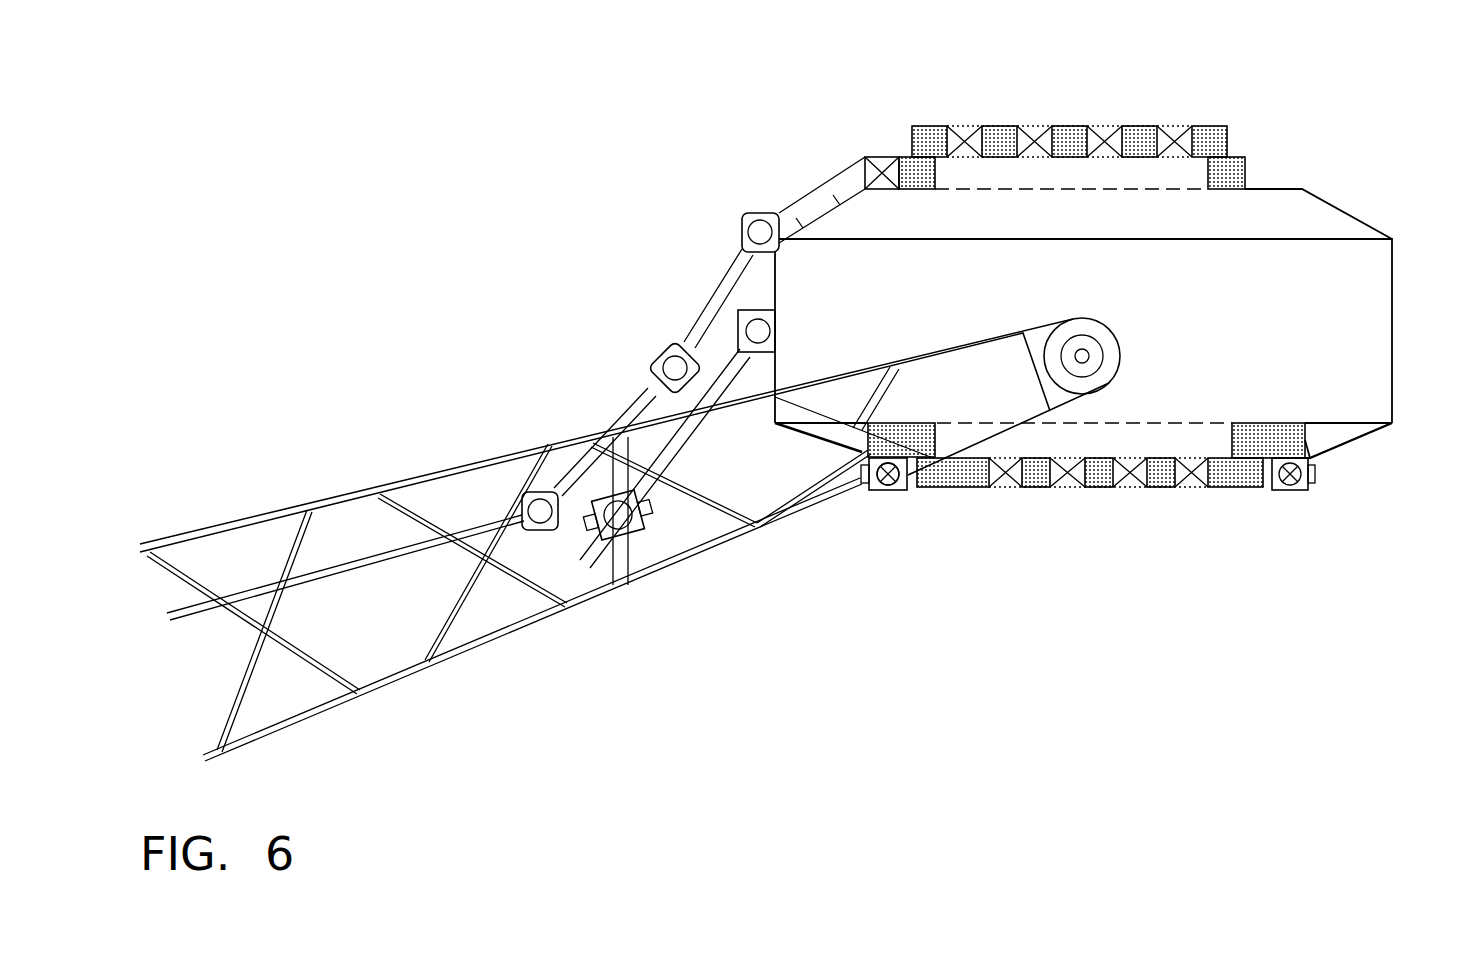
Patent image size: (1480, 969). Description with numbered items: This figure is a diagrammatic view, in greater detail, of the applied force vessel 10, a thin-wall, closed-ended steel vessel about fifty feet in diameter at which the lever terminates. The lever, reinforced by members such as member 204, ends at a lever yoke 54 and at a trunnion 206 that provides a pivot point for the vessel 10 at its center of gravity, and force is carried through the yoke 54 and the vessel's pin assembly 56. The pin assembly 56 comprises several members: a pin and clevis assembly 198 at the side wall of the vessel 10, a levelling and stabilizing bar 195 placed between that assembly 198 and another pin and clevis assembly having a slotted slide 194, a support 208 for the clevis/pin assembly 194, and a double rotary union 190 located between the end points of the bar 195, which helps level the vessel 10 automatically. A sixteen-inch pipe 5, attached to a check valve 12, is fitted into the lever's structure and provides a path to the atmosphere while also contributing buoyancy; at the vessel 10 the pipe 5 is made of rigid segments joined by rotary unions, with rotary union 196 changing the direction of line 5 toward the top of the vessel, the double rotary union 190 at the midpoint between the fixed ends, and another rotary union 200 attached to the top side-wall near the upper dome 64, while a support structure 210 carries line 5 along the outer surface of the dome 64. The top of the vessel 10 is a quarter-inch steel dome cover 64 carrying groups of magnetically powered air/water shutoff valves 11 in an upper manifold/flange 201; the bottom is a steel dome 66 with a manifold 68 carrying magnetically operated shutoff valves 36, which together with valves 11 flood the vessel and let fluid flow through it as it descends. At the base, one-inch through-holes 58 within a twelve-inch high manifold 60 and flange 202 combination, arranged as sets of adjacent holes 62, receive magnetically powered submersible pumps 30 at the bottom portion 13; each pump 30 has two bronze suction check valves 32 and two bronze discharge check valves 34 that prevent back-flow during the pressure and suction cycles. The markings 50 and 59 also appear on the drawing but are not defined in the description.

The pipe 5 is at (850, 168).
The applied force vessel 10 is at (1378, 103).
The magnetically powered air/water shutoff valves 11 is at (1172, 126).
The check valve 12 is at (882, 165).
The bottom portion 13 is at (1275, 605).
The magnetically powered submersible pumps 30 is at (893, 492).
The suction check valves 32 is at (862, 484).
The discharge check valves 34 is at (886, 492).
The magnetically operated shutoff valves 36 is at (1195, 488).
The direction of movement 50 is at (482, 192).
The lever yoke 54 is at (468, 655).
The pin assembly 56 is at (1057, 316).
The through-holes 58 is at (1275, 492).
The spacer elements 59 is at (1172, 157).
The manifold 60 is at (1310, 425).
The adjacent holes 62 is at (1310, 458).
The dome cover 64 is at (1280, 189).
The steel dome 66 is at (1385, 438).
The manifold 68 is at (960, 488).
The double rotary union 190 is at (650, 358).
The pin and clevis assembly having a slotted slide 194 is at (625, 518).
The levelling and stabilizing bar 195 is at (770, 372).
The rotary union 196 is at (533, 495).
The pin and clevis assembly 198 is at (772, 332).
The rotary union 200 is at (740, 232).
The upper manifold/flange 201 is at (1228, 140).
The flange 202 is at (1255, 423).
The reinforcing member 204 is at (190, 560).
The trunnion 206 is at (1087, 345).
The support 208 is at (622, 560).
The support structure 210 is at (838, 197).